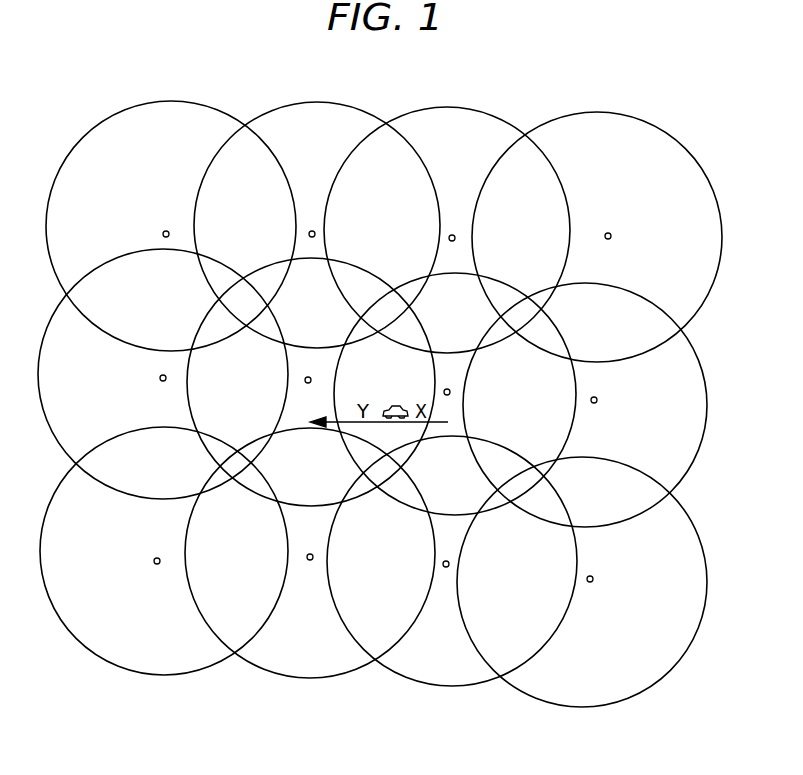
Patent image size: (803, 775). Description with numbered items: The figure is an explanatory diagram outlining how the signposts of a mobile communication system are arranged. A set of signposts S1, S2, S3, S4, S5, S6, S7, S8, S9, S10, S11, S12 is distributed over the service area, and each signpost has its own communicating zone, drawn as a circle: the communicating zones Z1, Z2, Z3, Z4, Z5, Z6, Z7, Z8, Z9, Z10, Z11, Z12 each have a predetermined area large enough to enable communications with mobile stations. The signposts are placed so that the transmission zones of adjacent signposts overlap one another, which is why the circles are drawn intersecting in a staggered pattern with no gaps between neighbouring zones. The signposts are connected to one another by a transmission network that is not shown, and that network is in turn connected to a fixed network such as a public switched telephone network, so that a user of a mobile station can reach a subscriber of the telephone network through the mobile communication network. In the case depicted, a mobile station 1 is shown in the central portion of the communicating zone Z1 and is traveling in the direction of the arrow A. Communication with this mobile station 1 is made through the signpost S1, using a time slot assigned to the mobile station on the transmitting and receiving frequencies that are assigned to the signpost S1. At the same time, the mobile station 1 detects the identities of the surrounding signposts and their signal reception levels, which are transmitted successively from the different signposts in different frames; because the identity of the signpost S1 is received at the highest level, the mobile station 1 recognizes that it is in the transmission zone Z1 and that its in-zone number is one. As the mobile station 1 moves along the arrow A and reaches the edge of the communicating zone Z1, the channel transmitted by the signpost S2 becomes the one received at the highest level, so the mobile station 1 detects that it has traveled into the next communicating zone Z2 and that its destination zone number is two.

The mobile station 1 is at (397, 407).
The arrow A is at (347, 418).
The communicating zone Z1 is at (573, 423).
The communicating zone Z2 is at (192, 397).
The communicating zone Z3 is at (348, 103).
The communicating zone Z4 is at (485, 109).
The communicating zone Z5 is at (626, 114).
The communicating zone Z6 is at (687, 342).
The communicating zone Z7 is at (680, 658).
The communicating zone Z8 is at (469, 687).
The communicating zone Z9 is at (346, 676).
The communicating zone Z10 is at (83, 647).
The communicating zone Z11 is at (51, 320).
The communicating zone Z12 is at (185, 99).
The signpost S1 is at (450, 391).
The signpost S2 is at (304, 394).
The signpost S3 is at (312, 230).
The signpost S4 is at (453, 234).
The signpost S5 is at (626, 222).
The signpost S6 is at (607, 398).
The signpost S7 is at (602, 580).
The signpost S8 is at (449, 564).
The signpost S9 is at (308, 544).
The signpost S10 is at (157, 549).
The signpost S11 is at (144, 378).
The signpost S12 is at (163, 223).